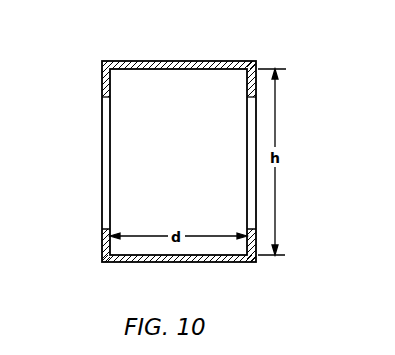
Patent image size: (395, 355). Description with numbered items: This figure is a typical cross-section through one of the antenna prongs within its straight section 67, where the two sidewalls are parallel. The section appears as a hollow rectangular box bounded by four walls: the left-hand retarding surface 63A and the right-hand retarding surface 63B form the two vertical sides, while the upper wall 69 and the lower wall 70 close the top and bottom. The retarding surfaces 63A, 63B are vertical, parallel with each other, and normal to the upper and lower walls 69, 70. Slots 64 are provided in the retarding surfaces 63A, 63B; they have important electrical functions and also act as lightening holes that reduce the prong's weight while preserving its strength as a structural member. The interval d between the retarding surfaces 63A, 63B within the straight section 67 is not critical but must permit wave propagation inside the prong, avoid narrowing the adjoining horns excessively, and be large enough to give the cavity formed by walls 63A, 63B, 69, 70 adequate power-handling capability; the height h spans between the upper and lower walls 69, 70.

The left-hand retarding surface 63A is at (102, 81).
The right-hand retarding surface 63B is at (246, 85).
The slots 64 is at (102, 202).
The straight section 67 is at (101, 265).
The upper wall 69 is at (230, 62).
The lower wall 70 is at (222, 259).